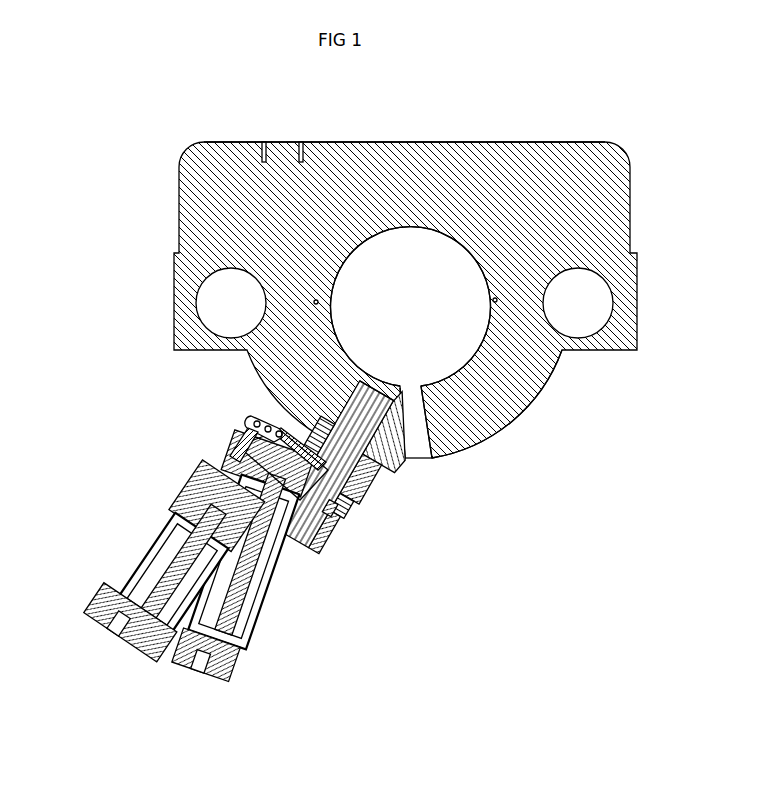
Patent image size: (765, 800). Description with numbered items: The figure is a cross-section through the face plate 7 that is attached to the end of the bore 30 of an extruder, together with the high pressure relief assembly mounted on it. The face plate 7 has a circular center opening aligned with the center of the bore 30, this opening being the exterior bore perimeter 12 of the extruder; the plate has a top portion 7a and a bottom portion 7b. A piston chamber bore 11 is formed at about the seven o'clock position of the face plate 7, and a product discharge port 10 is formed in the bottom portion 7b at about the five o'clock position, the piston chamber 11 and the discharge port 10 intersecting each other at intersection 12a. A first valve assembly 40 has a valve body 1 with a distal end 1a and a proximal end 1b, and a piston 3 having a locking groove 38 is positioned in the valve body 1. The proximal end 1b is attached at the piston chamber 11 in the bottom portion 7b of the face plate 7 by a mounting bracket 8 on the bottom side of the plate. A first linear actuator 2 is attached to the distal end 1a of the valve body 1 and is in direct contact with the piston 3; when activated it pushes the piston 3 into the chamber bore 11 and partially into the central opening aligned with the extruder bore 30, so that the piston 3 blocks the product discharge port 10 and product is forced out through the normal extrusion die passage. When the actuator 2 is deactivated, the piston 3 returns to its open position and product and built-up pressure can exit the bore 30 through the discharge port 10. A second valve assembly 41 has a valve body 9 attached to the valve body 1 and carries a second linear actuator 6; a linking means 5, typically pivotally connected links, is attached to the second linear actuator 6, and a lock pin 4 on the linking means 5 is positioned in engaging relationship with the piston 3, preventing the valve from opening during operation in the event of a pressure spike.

The valve body 1 is at (343, 480).
The distal end 1a is at (333, 537).
The proximal end 1b is at (365, 492).
The first linear actuator 2 is at (237, 653).
The piston 3 is at (346, 505).
The lock pin 4 is at (303, 455).
The linking means 5 is at (262, 423).
The second linear actuator 6 is at (123, 597).
The face plate 7 is at (178, 192).
The top portion 7a is at (432, 141).
The bottom portion 7b is at (542, 413).
The mounting bracket 8 is at (391, 468).
The valve body 9 is at (192, 472).
The product discharge port 10 is at (419, 437).
The piston chamber bore 11 is at (382, 391).
The exterior bore perimeter 12 is at (352, 358).
The intersection 12a is at (413, 386).
The bore 30 is at (412, 268).
The locking groove 38 is at (328, 514).
The first valve assembly 40 is at (216, 690).
The second valve assembly 41 is at (110, 627).